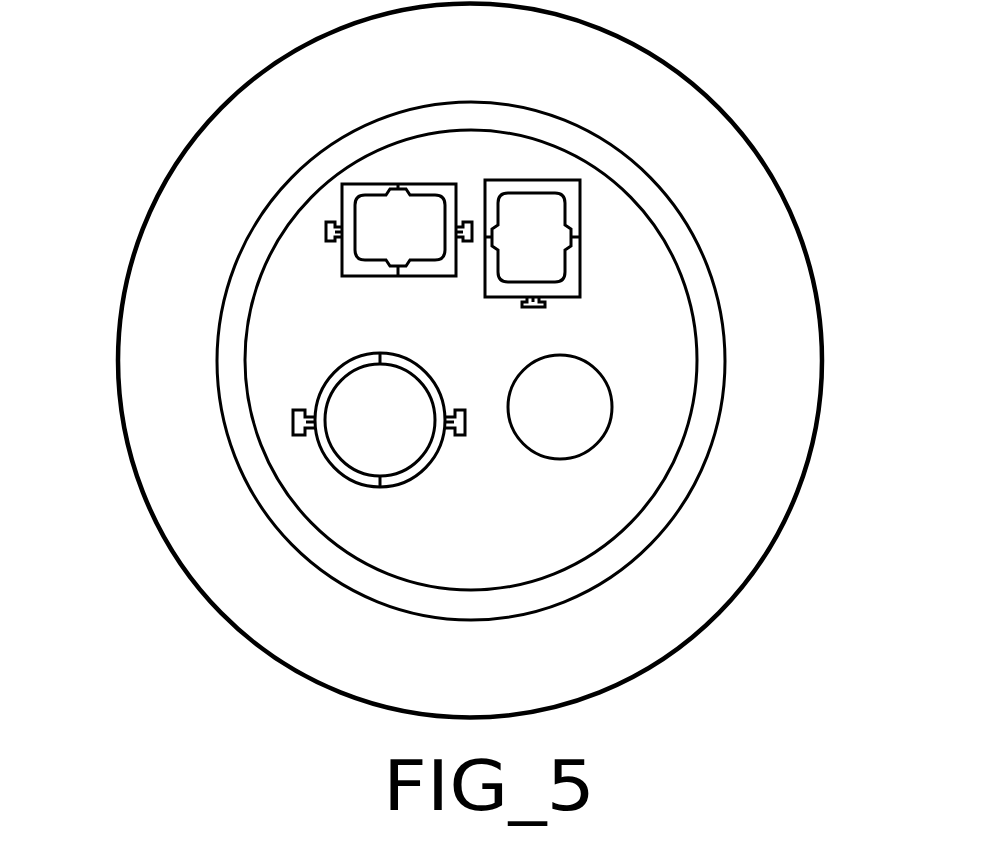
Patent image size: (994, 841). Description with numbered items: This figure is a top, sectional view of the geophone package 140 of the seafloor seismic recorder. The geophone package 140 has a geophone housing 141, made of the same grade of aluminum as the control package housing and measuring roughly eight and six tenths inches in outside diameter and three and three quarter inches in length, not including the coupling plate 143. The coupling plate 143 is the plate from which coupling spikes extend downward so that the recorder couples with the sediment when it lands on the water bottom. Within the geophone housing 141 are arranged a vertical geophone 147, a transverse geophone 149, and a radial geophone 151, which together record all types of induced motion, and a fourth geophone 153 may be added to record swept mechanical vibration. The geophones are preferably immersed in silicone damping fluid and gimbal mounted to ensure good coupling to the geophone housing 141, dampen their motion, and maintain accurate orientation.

The geophone package 140 is at (150, 567).
The geophone housing 141 is at (328, 133).
The coupling plate 143 is at (177, 163).
The vertical geophone 147 is at (412, 477).
The transverse geophone 149 is at (582, 240).
The radial geophone 151 is at (362, 277).
The fourth geophone 153 is at (581, 457).